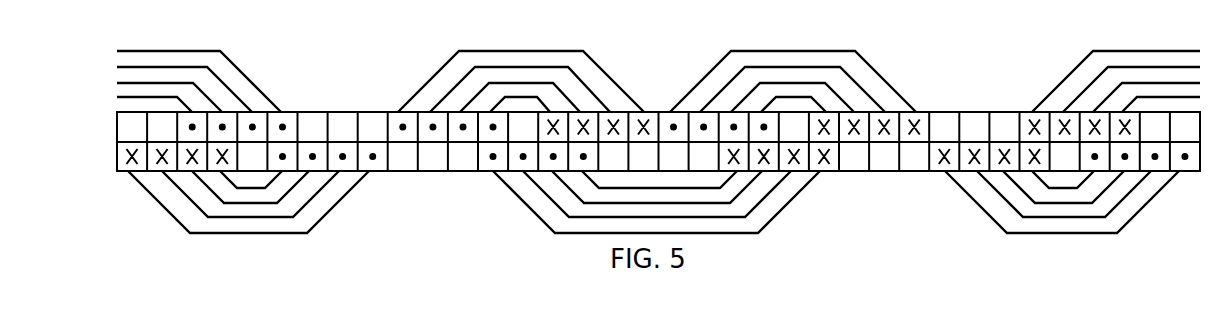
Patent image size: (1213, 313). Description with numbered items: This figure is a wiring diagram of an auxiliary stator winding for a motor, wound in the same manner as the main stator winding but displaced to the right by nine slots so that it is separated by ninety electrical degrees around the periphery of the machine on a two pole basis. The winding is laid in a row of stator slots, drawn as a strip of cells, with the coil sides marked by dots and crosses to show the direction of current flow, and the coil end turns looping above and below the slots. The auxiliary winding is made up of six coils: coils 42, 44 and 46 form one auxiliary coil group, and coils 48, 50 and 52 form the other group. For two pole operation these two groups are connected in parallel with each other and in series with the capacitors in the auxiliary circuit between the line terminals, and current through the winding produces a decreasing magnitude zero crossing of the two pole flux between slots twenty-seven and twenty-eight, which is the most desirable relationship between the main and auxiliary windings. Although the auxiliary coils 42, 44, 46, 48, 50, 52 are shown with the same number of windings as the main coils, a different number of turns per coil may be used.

The auxiliary winding coil 42 is at (558, 236).
The auxiliary winding coil 44 is at (530, 45).
The auxiliary winding coil 46 is at (822, 45).
The auxiliary winding coil 48 is at (214, 46).
The auxiliary winding coil 50 is at (1020, 232).
The auxiliary winding coil 52 is at (306, 235).